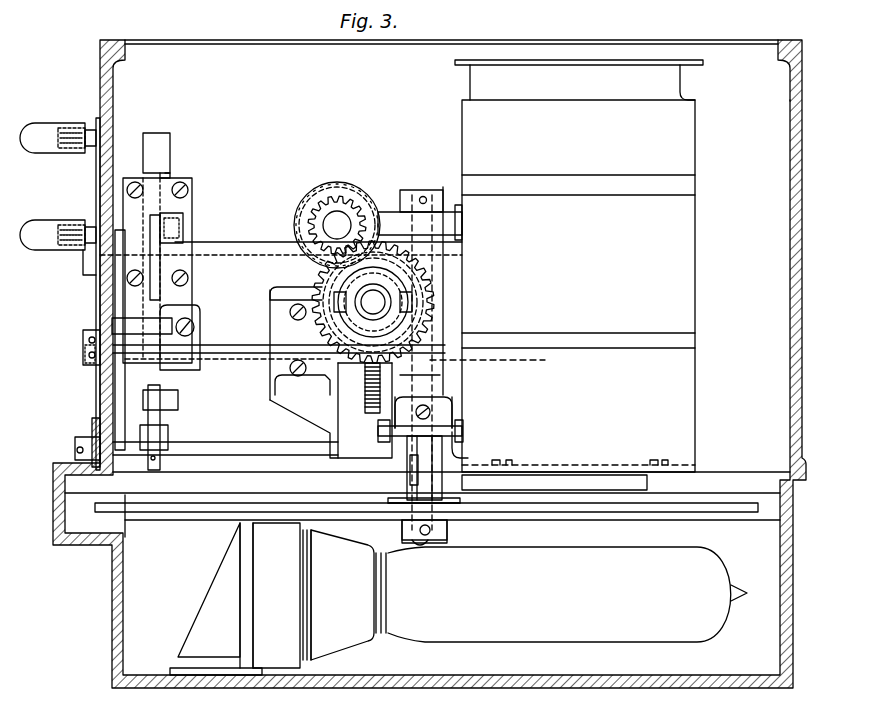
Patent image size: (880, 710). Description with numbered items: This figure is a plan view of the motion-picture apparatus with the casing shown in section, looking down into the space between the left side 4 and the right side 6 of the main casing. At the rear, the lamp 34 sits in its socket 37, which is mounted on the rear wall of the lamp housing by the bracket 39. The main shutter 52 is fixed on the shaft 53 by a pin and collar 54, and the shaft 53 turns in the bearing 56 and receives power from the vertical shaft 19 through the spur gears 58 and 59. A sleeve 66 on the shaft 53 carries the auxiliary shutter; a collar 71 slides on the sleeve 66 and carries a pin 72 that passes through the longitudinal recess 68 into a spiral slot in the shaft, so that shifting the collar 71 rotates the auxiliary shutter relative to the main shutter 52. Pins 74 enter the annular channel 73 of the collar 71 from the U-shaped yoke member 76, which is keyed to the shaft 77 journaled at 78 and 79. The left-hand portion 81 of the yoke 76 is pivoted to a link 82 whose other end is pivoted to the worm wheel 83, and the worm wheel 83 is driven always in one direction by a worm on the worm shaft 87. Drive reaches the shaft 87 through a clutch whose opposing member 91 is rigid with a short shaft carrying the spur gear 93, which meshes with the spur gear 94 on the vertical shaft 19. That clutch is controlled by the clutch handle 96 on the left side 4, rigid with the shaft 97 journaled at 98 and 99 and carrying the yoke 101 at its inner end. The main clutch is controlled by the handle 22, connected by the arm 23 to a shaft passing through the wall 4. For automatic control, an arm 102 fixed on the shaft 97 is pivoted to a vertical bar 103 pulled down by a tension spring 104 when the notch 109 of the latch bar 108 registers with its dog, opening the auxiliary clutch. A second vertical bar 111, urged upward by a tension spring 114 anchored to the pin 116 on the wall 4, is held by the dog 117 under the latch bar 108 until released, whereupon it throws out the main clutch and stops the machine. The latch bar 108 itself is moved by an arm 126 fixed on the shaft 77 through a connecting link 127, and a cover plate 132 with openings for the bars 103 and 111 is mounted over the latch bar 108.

The left side 4 is at (100, 72).
The right side 6 is at (790, 144).
The vertical shaft 19 is at (335, 223).
The handle 22 is at (50, 130).
The arm 23 is at (96, 165).
The lamp 34 is at (710, 630).
The socket 37 is at (360, 643).
The bracket 39 is at (215, 600).
The main shutter 52 is at (605, 503).
The shaft 53 is at (442, 378).
The pin and collar 54 is at (432, 538).
The bearing 56 is at (465, 295).
The spur gear 58 is at (365, 192).
The spur gear 59 is at (462, 225).
The sleeve 66 is at (413, 500).
The recess 68 is at (442, 468).
The collar 71 is at (445, 410).
The pin 72 is at (455, 412).
The annular channel 73 is at (415, 455).
The pins 74 is at (463, 432).
The yoke member 76 is at (468, 452).
The shaft 77 is at (251, 448).
The journal 78 is at (338, 462).
The journal 79 is at (75, 450).
The left-hand portion 81 is at (388, 425).
The link 82 is at (445, 382).
The worm wheel 83 is at (445, 362).
The worm shaft 87 is at (378, 300).
The clutch member 91 is at (296, 320).
The spur gear 93 is at (440, 337).
The spur gear 94 is at (338, 200).
The clutch handle 96 is at (40, 240).
The shaft 97 is at (224, 354).
The journal 98 is at (86, 365).
The journal 99 is at (306, 386).
The yoke 101 is at (282, 300).
The arm 102 is at (115, 300).
The vertical bar 103 is at (185, 236).
The tension spring 104 is at (160, 240).
The latch bar 108 is at (160, 148).
The notch 109 is at (170, 175).
The vertical bar 111 is at (190, 332).
The tension spring 114 is at (195, 322).
The pin 116 is at (83, 344).
The dog 117 is at (180, 318).
The arm 126 is at (92, 436).
The connecting link 127 is at (165, 420).
The cover plate 132 is at (188, 208).